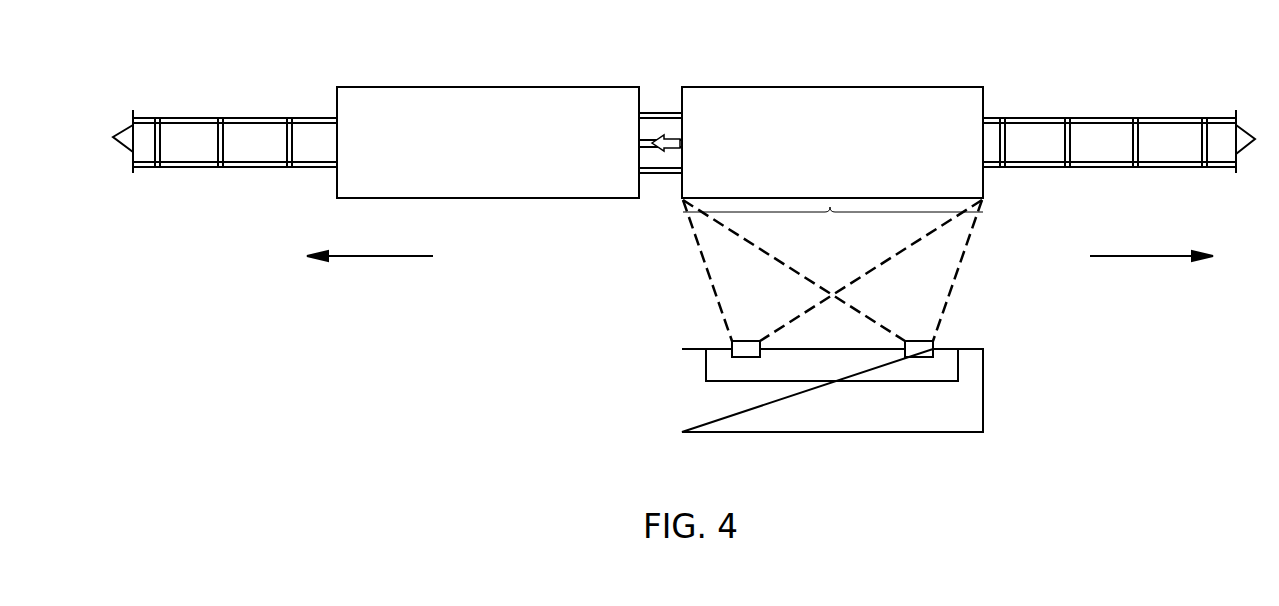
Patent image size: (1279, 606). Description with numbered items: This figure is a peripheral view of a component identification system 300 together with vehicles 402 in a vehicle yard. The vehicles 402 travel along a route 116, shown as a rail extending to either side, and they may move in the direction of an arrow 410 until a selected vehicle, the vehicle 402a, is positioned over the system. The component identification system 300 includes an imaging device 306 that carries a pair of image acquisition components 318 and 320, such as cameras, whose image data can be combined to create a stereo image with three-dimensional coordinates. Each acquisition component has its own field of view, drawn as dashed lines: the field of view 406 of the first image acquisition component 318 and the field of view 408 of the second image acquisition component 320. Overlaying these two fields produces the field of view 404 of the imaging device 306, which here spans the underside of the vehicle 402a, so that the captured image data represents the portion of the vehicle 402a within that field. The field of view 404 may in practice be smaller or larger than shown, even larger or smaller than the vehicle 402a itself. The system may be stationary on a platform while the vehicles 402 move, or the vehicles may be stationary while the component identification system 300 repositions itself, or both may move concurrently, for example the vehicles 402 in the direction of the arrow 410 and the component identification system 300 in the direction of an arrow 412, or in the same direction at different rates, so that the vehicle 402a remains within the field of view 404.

The route 116 is at (226, 104).
The vehicle 402 is at (418, 86).
The vehicle 402a is at (762, 86).
The field of view 404 is at (833, 226).
The field of view 406 is at (717, 278).
The field of view 408 is at (955, 250).
The image acquisition component 318 is at (732, 339).
The image acquisition component 320 is at (933, 343).
The component identification system 300 is at (985, 387).
The imaging device 306 is at (742, 381).
The arrow 412 is at (371, 260).
The arrow 410 is at (1150, 260).